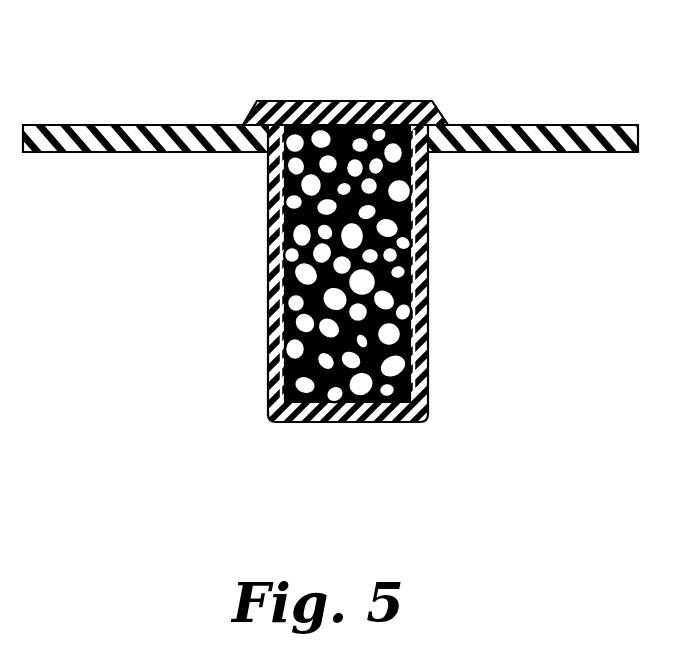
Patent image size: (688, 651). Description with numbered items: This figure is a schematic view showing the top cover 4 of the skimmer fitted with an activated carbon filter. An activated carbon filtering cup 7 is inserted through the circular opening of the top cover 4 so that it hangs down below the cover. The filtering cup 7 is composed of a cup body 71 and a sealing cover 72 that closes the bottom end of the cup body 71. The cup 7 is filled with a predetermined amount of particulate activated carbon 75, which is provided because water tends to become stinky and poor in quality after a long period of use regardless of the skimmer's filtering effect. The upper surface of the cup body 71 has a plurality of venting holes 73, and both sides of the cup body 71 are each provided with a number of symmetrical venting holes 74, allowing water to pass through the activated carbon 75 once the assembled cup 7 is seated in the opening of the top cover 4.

The top cover 4 is at (581, 122).
The activated carbon filtering cup 7 is at (254, 96).
The cup body 71 is at (430, 258).
The sealing cover 72 is at (368, 423).
The venting holes 73 is at (327, 100).
The symmetrical venting holes 74 is at (418, 170).
The particulate activated carbon 75 is at (404, 323).